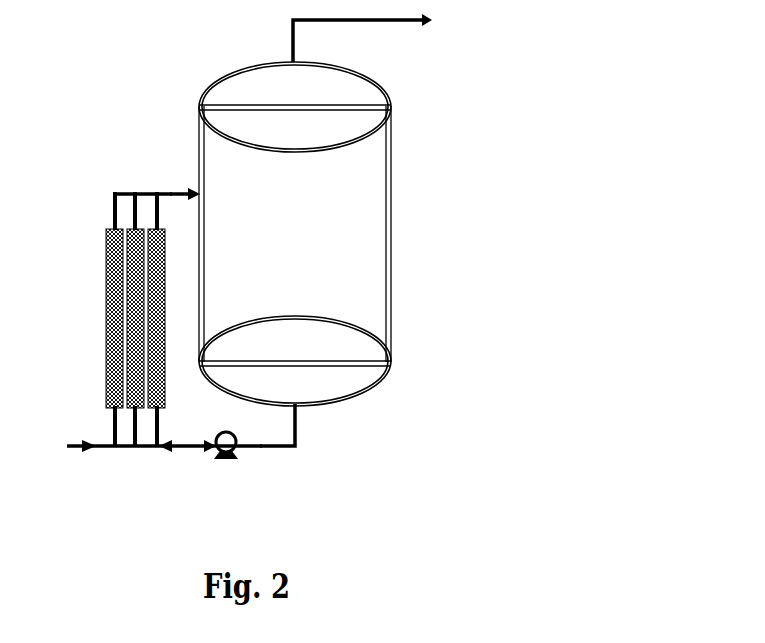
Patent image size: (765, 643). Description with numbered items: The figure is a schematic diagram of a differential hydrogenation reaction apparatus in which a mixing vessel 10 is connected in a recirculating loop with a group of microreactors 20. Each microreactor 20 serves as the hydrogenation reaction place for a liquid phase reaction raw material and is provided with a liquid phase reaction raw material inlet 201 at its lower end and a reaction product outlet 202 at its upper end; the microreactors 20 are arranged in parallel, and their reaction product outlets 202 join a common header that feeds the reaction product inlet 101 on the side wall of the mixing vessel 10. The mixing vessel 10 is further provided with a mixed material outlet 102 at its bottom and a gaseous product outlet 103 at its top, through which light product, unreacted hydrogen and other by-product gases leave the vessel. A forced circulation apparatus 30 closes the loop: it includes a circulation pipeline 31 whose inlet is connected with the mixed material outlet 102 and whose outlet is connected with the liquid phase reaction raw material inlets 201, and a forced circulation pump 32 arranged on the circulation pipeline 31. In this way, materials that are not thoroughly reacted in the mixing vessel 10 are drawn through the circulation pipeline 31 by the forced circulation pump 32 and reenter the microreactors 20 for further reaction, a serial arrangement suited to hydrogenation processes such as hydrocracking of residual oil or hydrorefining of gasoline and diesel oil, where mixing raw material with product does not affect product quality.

The mixing vessel 10 is at (389, 190).
The reaction product inlet 101 is at (197, 192).
The mixed material outlet 102 is at (300, 410).
The gaseous product outlet 103 is at (292, 58).
The microreactor 20 is at (106, 345).
The liquid phase reaction raw material inlet 201 is at (115, 410).
The reaction product outlet 202 is at (109, 229).
The forced circulation apparatus 30 is at (199, 491).
The circulation pipeline 31 is at (272, 450).
The forced circulation pump 32 is at (225, 462).